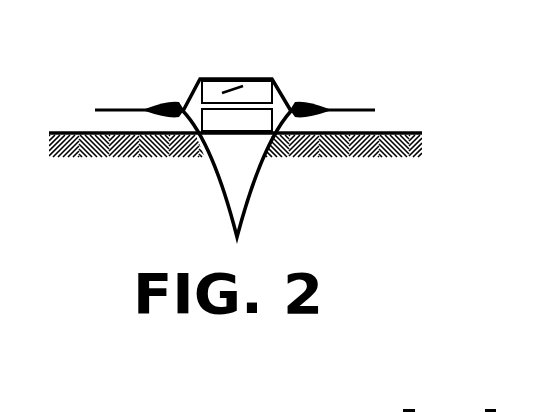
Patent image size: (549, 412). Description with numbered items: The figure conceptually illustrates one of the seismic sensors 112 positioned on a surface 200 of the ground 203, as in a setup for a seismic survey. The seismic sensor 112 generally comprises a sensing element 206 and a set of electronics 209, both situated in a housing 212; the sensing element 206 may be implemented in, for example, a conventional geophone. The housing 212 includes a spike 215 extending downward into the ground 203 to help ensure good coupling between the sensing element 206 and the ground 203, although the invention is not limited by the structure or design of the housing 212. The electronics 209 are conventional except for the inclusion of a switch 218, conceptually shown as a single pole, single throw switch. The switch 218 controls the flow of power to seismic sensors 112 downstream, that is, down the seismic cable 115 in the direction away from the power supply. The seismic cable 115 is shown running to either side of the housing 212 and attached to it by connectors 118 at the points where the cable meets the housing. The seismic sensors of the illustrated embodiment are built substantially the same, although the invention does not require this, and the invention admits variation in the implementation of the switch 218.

The seismic sensor 112 is at (130, 24).
The seismic cable 115 is at (112, 108).
The connector 118 is at (158, 101).
The surface 200 is at (405, 133).
The ground 203 is at (400, 152).
The sensing element 206 is at (237, 140).
The electronics 209 is at (238, 79).
The housing 212 is at (196, 82).
The spike 215 is at (220, 195).
The switch 218 is at (252, 88).